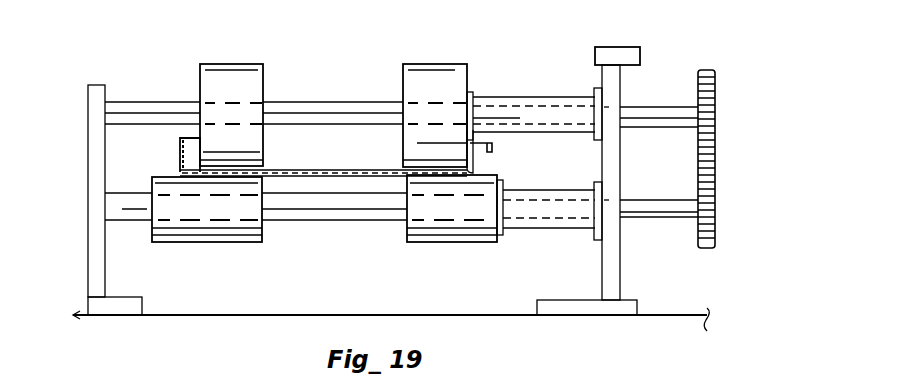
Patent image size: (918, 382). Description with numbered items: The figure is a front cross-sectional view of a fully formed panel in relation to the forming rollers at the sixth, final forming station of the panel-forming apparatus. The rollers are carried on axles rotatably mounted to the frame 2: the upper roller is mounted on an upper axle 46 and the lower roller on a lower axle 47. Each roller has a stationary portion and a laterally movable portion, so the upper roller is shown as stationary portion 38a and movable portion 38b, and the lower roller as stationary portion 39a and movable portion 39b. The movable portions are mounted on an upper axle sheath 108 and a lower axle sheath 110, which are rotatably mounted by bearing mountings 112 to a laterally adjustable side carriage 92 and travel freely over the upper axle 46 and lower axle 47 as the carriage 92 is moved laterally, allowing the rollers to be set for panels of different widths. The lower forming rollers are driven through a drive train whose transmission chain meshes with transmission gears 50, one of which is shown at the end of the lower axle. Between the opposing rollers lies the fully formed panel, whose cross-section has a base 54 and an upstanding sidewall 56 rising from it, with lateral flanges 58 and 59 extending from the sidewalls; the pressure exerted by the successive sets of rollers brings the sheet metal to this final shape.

The frame 2 is at (96, 275).
The stationary roller portion of sixth upper roller 38a is at (235, 73).
The laterally movable roller portion of sixth upper roller 38b is at (428, 78).
The stationary roller portion of sixth lower roller 39a is at (205, 240).
The laterally movable roller portion of sixth lower roller 39b is at (457, 235).
The upper axle 46 is at (293, 110).
The lower axle 47 is at (292, 212).
The transmission gear 50 is at (716, 110).
The base 54 is at (360, 176).
The upstanding sidewall 56 is at (178, 156).
The lateral flange 58 is at (195, 137).
The lateral flange 59 is at (478, 143).
The side carriage 92 is at (615, 62).
The upper axle sheath 108 is at (528, 100).
The lower axle sheath 110 is at (560, 210).
The bearing mounting 112 is at (595, 88).